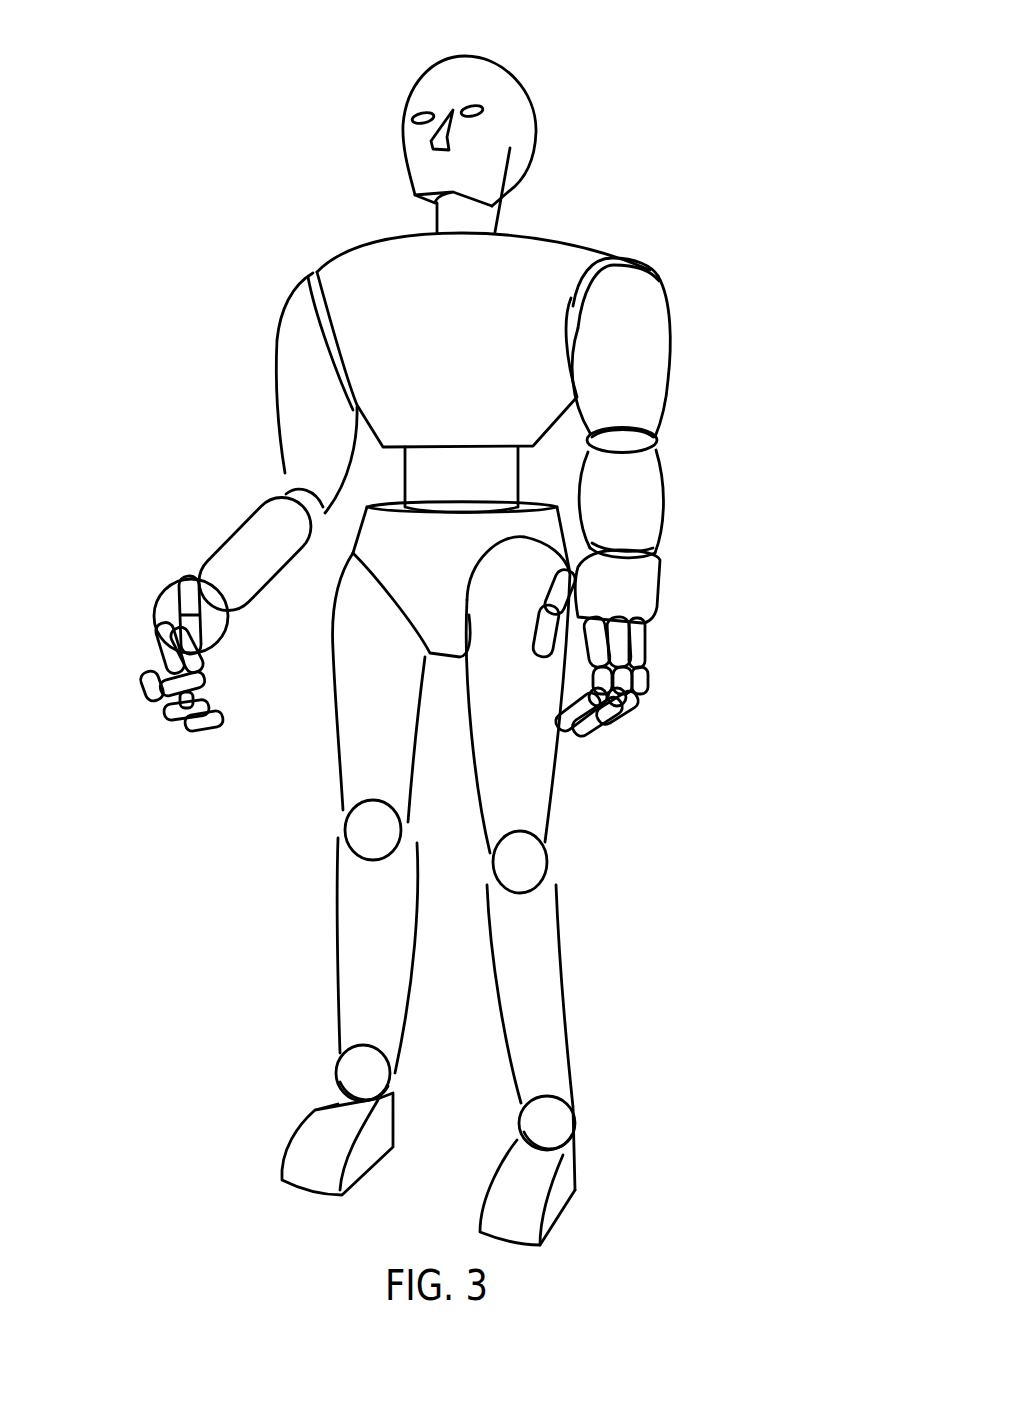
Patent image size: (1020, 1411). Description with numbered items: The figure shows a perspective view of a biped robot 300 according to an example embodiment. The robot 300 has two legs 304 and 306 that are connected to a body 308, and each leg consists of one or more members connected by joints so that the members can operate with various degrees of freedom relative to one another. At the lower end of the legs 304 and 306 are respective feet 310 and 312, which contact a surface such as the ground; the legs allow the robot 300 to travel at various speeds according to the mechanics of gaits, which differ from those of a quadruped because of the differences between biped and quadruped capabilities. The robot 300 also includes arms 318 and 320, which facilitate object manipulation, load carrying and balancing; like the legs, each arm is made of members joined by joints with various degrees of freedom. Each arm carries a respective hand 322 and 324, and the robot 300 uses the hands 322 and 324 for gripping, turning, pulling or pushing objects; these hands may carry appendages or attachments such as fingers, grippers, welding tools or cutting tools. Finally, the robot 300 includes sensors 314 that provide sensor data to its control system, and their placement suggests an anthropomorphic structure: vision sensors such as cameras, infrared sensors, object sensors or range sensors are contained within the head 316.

The robot 300 is at (692, 170).
The leg 304 is at (577, 920).
The leg 306 is at (310, 902).
The body 308 is at (332, 540).
The foot 310 is at (575, 1172).
The foot 312 is at (313, 1108).
The sensor 314 is at (422, 113).
The head 316 is at (521, 60).
The arm 318 is at (693, 507).
The arm 320 is at (193, 532).
The hand 322 is at (657, 607).
The hand 324 is at (155, 612).